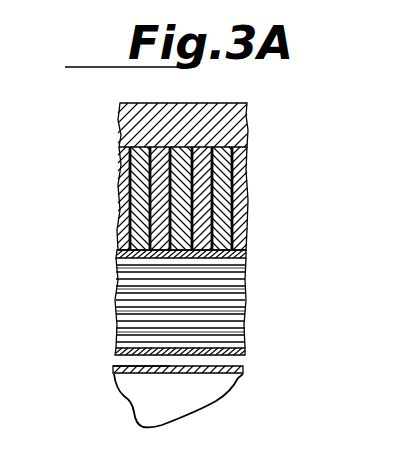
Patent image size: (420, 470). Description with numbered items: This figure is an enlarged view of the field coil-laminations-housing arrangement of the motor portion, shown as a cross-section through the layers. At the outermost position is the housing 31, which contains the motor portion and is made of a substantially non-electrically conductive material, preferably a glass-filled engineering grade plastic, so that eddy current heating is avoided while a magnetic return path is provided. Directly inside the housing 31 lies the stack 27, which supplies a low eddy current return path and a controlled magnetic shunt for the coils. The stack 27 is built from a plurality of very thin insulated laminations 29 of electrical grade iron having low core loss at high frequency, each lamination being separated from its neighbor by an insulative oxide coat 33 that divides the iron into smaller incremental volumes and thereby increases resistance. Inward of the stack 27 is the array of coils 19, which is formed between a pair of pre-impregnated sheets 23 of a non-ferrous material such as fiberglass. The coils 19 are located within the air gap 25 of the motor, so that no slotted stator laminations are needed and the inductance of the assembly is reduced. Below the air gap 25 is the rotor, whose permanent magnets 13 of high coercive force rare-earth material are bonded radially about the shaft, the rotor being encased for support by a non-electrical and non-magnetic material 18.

The permanent magnets 13 is at (160, 392).
The non-electrical and non-magnetic material 18 is at (114, 369).
The coils 19 is at (245, 299).
The pre-impregnated sheets 23 is at (243, 255).
The air gap 25 is at (243, 365).
The stack 27 is at (195, 173).
The insulated laminations 29 is at (122, 170).
The housing 31 is at (224, 126).
The insulative oxide coat 33 is at (129, 193).